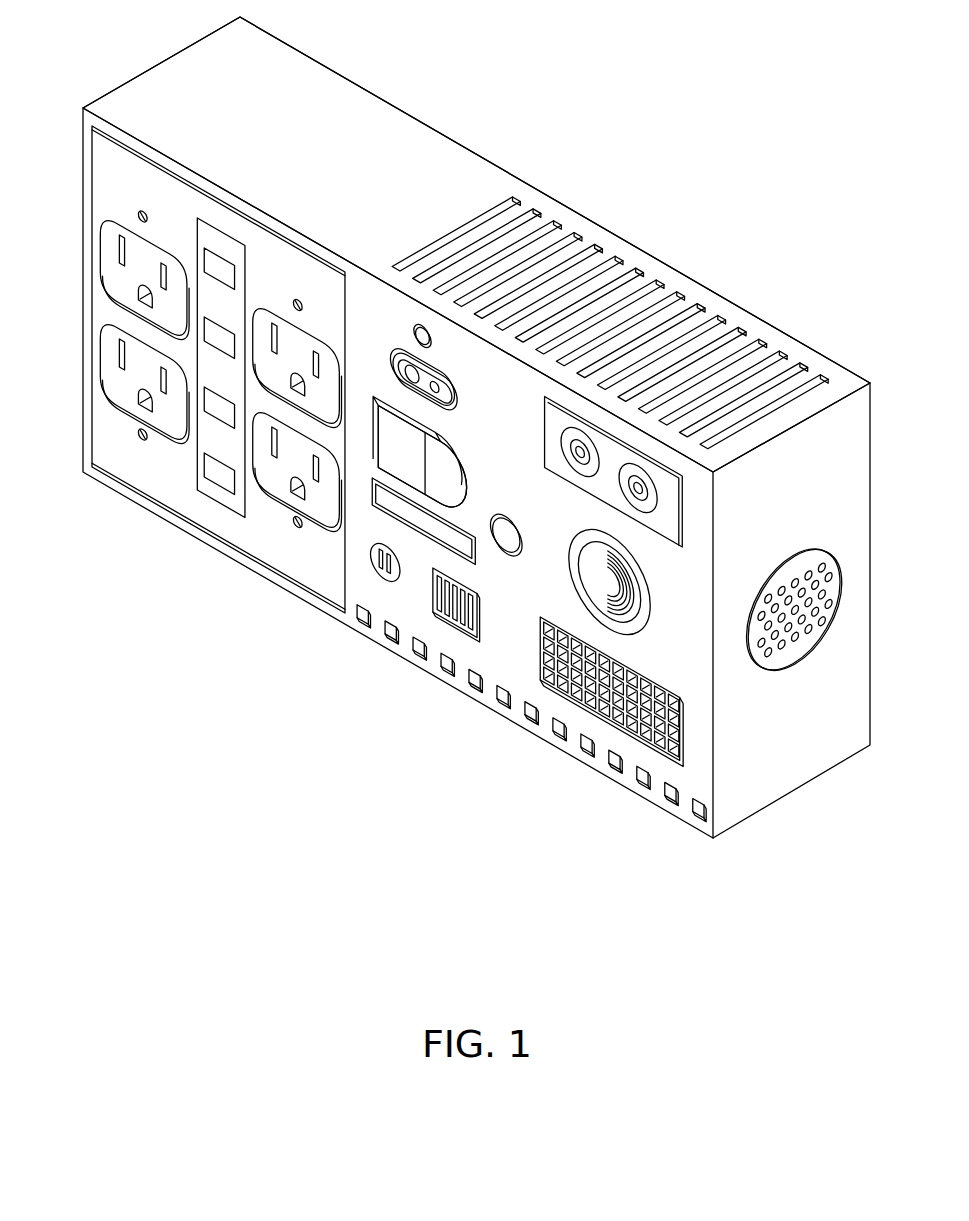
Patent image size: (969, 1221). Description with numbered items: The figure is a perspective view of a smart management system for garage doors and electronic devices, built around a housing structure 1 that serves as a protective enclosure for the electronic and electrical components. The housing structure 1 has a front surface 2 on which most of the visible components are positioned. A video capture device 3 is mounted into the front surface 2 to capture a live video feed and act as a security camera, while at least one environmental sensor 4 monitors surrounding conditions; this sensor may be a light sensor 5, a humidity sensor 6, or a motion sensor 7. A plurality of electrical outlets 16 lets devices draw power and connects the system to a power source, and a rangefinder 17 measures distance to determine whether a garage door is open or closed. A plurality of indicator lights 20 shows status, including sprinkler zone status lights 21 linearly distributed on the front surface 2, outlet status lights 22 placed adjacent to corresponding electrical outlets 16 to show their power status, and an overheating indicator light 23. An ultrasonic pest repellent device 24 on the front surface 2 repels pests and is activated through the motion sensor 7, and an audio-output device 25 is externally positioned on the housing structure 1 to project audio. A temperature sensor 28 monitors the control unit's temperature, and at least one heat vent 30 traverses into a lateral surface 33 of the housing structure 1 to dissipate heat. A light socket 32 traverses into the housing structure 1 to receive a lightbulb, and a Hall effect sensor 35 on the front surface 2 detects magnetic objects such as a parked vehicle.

The housing structure 1 is at (66, 254).
The front surface 2 is at (697, 522).
The video capture device 3 is at (452, 392).
The environmental sensor 4 is at (358, 435).
The light sensor 5 is at (372, 510).
The humidity sensor 6 is at (477, 612).
The motion sensor 7 is at (462, 480).
The electrical outlets 16 is at (150, 262).
The rangefinder 17 is at (546, 436).
The indicator lights 20 is at (470, 690).
The sprinkler zone status lights 21 is at (500, 688).
The outlet status lights 22 is at (143, 212).
The overheating indicator light 23 is at (415, 337).
The ultrasonic pest repellent device 24 is at (540, 622).
The audio-output device 25 is at (812, 556).
The temperature sensor 28 is at (388, 580).
The heat vent 30 is at (545, 225).
The light socket 32 is at (612, 587).
The lateral surface 33 is at (204, 54).
The Hall effect sensor 35 is at (520, 545).